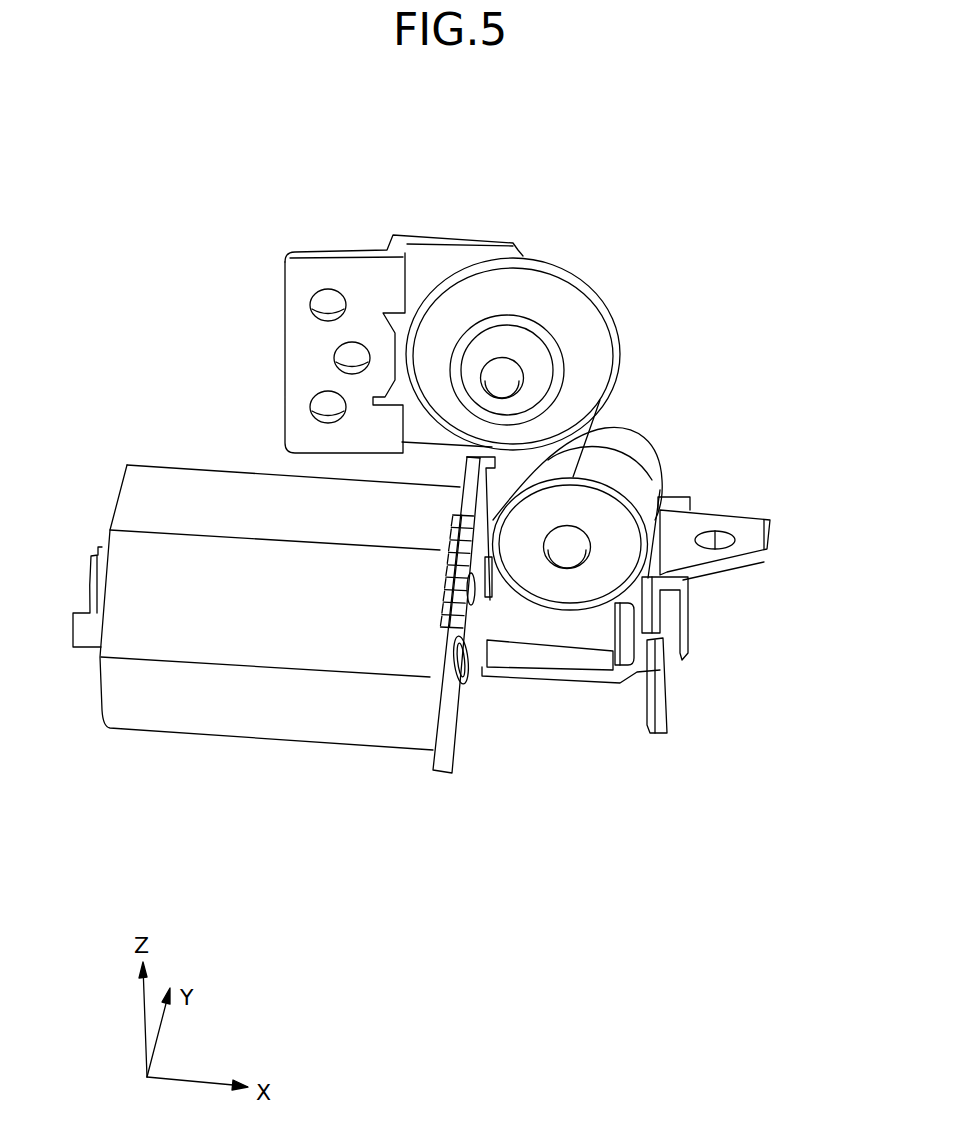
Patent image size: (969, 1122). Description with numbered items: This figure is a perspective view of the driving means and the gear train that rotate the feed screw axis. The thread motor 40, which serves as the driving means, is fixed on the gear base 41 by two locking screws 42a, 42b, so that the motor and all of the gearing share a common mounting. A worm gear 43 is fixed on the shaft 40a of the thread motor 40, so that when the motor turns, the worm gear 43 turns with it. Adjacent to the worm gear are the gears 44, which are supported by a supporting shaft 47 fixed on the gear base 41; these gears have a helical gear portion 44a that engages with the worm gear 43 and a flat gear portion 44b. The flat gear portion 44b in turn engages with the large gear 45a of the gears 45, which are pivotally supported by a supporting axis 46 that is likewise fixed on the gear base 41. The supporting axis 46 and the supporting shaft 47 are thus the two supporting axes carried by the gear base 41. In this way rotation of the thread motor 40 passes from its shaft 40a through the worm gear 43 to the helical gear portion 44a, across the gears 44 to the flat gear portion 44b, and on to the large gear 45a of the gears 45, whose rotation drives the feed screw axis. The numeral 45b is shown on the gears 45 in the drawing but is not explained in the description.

The thread motor 40 is at (163, 713).
The shaft of the thread motor 40a is at (470, 625).
The gear base 41 is at (340, 268).
The locking screw 42a is at (495, 600).
The locking screw 42b is at (455, 676).
The worm gear 43 is at (567, 657).
The gears 44 is at (617, 552).
The helical gear portion 44a is at (633, 500).
The flat gear portion 44b is at (637, 457).
The gears 45 is at (558, 275).
The large gear 45a is at (590, 300).
The pulley hub 45b is at (488, 318).
The supporting axis 46 is at (507, 380).
The supporting shaft 47 is at (580, 557).